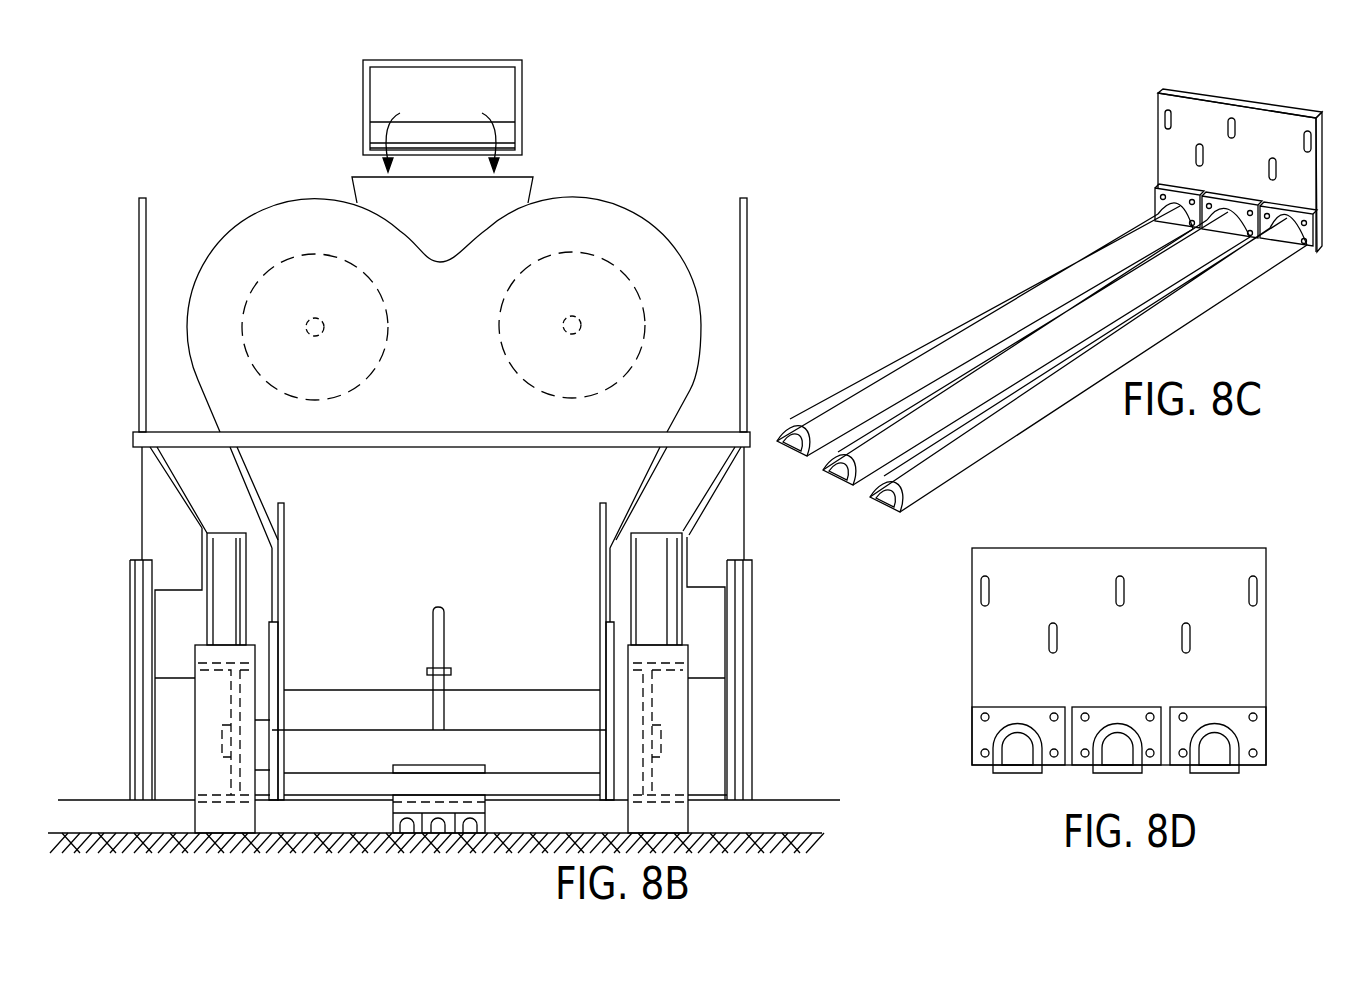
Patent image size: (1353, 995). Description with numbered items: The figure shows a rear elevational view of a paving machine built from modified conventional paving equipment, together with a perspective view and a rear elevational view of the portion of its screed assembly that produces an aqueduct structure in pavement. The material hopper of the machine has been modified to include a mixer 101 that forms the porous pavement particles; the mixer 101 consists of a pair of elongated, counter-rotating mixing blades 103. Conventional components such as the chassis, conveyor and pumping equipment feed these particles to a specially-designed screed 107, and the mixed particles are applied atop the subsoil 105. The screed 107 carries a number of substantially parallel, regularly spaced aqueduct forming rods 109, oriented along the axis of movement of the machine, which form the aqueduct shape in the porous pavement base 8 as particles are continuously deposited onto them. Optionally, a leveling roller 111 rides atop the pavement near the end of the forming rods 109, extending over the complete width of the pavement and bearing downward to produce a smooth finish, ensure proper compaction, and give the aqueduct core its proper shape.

In FIG. 8B, the base 8 is at (762, 800).
In FIG. 8B, the mixer 101 is at (444, 235).
In FIG. 8B, the mixing blades 103 is at (358, 303).
In FIG. 8B, the subsoil 105 is at (333, 842).
In FIG. 8B, the screed 107 is at (705, 545).
In FIG. 8B, the aqueduct forming rods 109 is at (470, 825).
In FIG. 8C, the aqueduct forming rods 109 is at (866, 398).
In FIG. 8D, the aqueduct forming rods 109 is at (993, 740).
In FIG. 8B, the leveling roller 111 is at (477, 740).